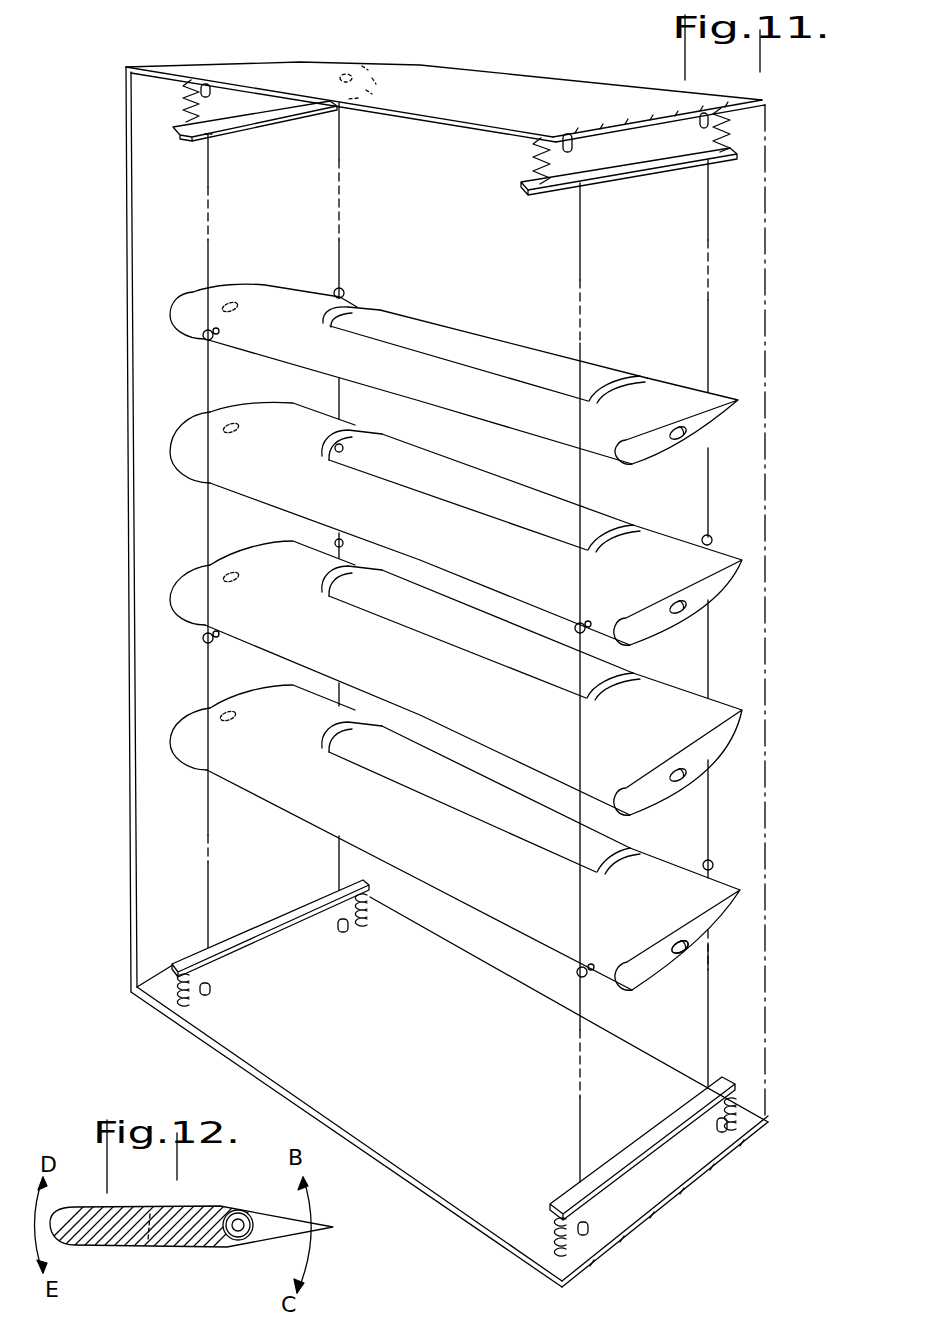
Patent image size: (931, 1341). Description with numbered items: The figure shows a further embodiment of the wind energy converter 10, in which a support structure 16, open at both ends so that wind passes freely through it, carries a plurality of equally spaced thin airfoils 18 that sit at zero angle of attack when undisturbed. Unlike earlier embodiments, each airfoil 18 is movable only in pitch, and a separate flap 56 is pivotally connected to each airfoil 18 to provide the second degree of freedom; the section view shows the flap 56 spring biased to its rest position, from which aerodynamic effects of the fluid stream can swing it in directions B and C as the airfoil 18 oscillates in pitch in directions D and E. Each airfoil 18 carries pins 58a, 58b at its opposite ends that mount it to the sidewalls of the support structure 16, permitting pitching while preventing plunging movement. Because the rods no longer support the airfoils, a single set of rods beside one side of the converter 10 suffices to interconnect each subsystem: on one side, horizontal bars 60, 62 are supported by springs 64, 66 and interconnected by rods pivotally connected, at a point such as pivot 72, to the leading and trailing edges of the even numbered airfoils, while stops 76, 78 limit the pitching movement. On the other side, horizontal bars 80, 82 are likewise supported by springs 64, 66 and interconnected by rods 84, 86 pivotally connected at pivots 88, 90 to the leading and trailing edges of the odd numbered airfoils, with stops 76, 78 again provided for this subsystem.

In FIG. 11, the energy converter 10 is at (790, 262).
In FIG. 11, the support structure 16 is at (767, 170).
In FIG. 11, the airfoil 18 is at (493, 80).
In FIG. 12, the airfoil 18 is at (113, 1250).
In FIG. 11, the flap 56 is at (410, 800).
In FIG. 12, the flap 56 is at (256, 1237).
In FIG. 11, the pin 58a is at (698, 955).
In FIG. 11, the pin 58b is at (236, 726).
In FIG. 12, the pin 58b is at (151, 1240).
In FIG. 11, the horizontal bar 60 is at (645, 1140).
In FIG. 11, the horizontal bar 62 is at (612, 183).
In FIG. 11, the spring 64 is at (196, 1000).
In FIG. 11, the spring 66 is at (186, 112).
In FIG. 11, the pivotal connection 72 is at (576, 978).
In FIG. 11, the stop 76 is at (213, 990).
In FIG. 11, the stop 78 is at (211, 90).
In FIG. 11, the horizontal bar 80 is at (272, 930).
In FIG. 11, the horizontal bar 82 is at (263, 127).
In FIG. 11, the rod 84 is at (206, 905).
In FIG. 11, the rod 86 is at (336, 862).
In FIG. 11, the pivotal connection 88 is at (203, 340).
In FIG. 11, the pivotal connection 90 is at (348, 293).